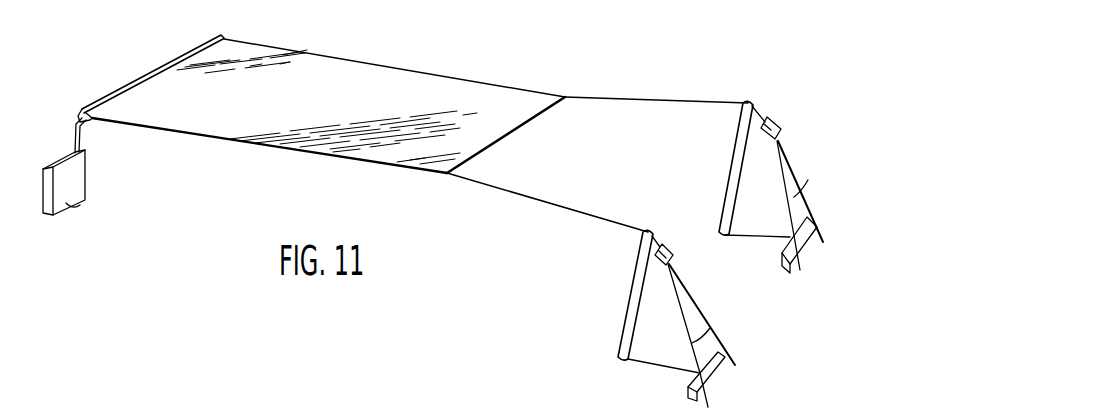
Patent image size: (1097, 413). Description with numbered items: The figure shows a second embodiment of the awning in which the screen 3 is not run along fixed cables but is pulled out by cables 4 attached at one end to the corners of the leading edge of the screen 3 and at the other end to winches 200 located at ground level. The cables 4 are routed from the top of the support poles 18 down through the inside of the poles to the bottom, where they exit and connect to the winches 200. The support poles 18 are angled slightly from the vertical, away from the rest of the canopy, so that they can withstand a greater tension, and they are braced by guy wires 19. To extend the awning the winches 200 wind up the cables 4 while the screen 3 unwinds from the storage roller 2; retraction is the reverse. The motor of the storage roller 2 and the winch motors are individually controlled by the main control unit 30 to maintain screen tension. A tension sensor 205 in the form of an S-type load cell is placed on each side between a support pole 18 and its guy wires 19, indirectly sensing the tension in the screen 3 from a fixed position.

The storage roller 2 is at (151, 78).
The screen 3 is at (328, 106).
The cables 4 is at (597, 155).
The support poles 18 is at (672, 230).
The guy wires 19 is at (733, 274).
The main control unit 30 is at (68, 191).
The winches 200 is at (771, 315).
The tension sensors 205 is at (740, 184).